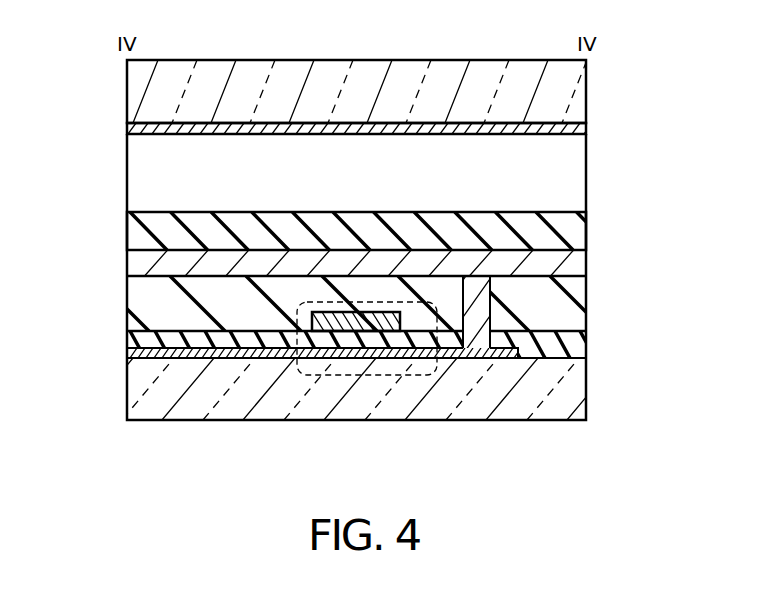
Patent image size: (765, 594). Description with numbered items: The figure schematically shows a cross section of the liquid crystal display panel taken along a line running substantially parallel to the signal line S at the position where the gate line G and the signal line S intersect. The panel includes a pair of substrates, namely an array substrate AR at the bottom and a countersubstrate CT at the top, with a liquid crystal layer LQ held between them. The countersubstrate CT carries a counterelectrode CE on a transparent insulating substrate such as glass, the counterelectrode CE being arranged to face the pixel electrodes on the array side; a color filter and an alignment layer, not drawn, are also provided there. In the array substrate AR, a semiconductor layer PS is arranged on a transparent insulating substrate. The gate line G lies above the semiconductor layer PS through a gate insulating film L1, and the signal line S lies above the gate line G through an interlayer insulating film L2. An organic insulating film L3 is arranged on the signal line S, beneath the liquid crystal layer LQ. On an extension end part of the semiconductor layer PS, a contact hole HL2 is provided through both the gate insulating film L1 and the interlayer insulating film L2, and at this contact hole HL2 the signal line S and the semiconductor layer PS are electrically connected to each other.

The countersubstrate CT is at (590, 60).
The counterelectrode CE is at (132, 122).
The liquid crystal layer LQ is at (582, 173).
The organic insulating film L3 is at (132, 223).
The signal line S is at (127, 265).
The interlayer insulating film L2 is at (132, 295).
The gate insulating film L1 is at (127, 340).
The semiconductor layer PS is at (248, 362).
The gate line G is at (355, 322).
The contact hole HL2 is at (478, 330).
The array substrate AR is at (590, 213).